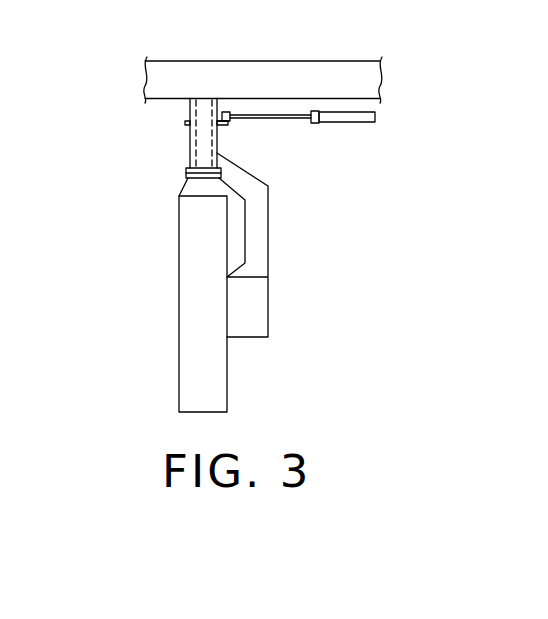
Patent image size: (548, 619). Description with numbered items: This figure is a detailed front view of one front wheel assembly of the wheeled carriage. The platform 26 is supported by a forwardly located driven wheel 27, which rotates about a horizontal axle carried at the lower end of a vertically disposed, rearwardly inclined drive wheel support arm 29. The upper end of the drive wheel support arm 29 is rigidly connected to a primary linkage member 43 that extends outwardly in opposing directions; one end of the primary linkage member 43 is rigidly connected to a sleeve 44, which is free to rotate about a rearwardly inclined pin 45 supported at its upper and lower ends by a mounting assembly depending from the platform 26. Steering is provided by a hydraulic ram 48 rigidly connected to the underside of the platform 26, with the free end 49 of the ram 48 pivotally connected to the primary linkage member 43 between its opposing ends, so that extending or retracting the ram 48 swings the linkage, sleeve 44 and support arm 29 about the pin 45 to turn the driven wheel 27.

The platform 26 is at (350, 70).
The driven wheel 27 is at (187, 368).
The drive wheel support arm 29 is at (257, 250).
The primary linkage member 43 is at (218, 128).
The sleeve 44 is at (191, 146).
The pin 45 is at (193, 180).
The hydraulic ram 48 is at (355, 118).
The free end 49 is at (226, 112).